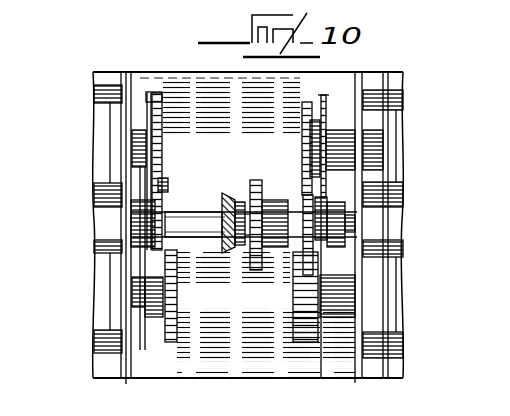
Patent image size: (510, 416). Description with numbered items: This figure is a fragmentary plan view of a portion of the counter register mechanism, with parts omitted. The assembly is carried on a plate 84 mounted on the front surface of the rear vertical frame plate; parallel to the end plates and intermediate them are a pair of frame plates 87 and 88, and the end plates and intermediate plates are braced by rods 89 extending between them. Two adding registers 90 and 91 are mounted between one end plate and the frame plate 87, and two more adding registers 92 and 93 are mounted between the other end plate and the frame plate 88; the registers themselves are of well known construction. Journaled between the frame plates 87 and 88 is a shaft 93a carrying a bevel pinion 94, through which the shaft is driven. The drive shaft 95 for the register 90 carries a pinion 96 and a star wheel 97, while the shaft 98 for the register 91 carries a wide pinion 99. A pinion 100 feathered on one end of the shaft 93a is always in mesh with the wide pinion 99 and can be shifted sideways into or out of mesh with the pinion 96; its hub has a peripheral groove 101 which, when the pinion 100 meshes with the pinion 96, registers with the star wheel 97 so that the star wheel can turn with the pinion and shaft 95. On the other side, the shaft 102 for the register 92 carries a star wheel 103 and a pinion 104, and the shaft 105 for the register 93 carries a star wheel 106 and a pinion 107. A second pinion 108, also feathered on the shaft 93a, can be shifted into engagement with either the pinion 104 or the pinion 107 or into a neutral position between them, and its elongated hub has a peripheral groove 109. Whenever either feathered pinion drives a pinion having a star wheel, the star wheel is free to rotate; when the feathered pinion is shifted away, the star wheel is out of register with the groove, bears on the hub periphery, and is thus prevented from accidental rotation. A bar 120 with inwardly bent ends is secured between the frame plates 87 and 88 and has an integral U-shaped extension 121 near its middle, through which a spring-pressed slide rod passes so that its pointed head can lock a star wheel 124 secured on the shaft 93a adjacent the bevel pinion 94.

The plate 84 is at (305, 126).
The frame plate 87 is at (343, 243).
The frame plate 88 is at (121, 242).
The rods 89 is at (100, 191).
The adding register 90 is at (391, 151).
The adding register 91 is at (407, 281).
The adding register 92 is at (102, 158).
The adding register 93 is at (102, 292).
The shaft 93a is at (198, 212).
The bevel pinion 94 is at (230, 246).
The drive shaft 95 is at (337, 130).
The pinion 96 is at (302, 114).
The star wheel 97 is at (325, 95).
The shaft 98 is at (346, 302).
The wide pinion 99 is at (305, 337).
The pinion 100 is at (305, 194).
The peripheral groove 101 is at (345, 241).
The shaft 102 is at (138, 130).
The star wheel 103 is at (150, 93).
The pinion 104 is at (162, 117).
The shaft 105 is at (158, 302).
The star wheel 106 is at (145, 347).
The pinion 107 is at (177, 322).
The pinion 108 is at (167, 188).
The peripheral groove 109 is at (150, 248).
The bar 120 is at (389, 397).
The U-shaped extension 121 is at (114, 397).
The star wheel 124 is at (258, 180).